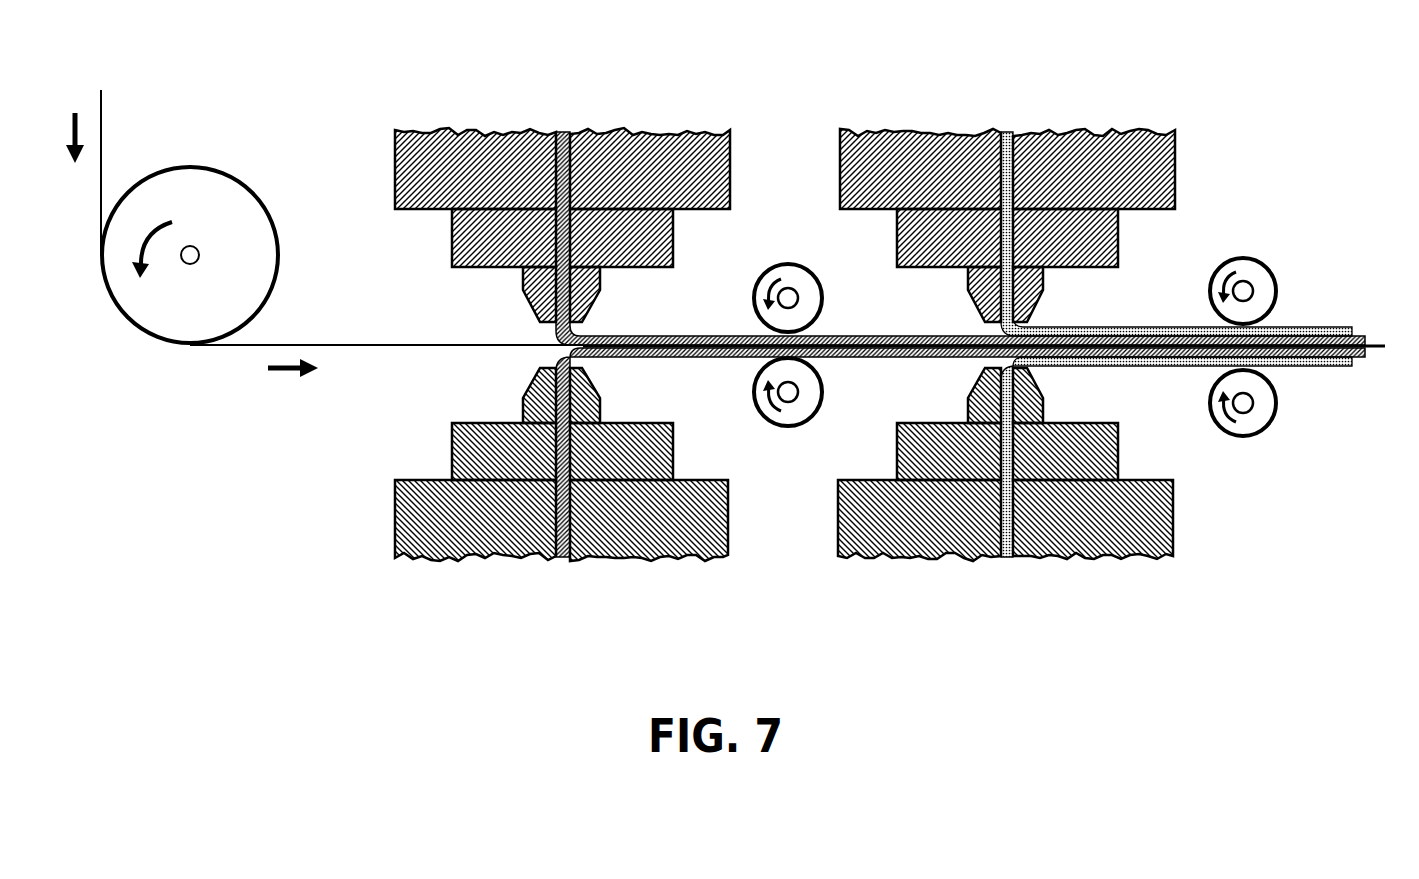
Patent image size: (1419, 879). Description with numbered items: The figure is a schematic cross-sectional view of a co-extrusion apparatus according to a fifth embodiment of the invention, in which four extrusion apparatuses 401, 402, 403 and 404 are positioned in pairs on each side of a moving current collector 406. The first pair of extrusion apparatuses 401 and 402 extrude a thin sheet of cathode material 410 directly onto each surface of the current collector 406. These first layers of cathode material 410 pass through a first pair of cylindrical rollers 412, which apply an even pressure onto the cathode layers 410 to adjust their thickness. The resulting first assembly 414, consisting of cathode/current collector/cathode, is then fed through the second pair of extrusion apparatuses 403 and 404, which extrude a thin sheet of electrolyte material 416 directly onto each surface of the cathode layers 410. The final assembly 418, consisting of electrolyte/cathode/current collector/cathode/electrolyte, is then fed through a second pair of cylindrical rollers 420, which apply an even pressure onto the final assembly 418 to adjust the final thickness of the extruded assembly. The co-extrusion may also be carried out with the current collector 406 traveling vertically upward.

The extrusion apparatus 401 is at (561, 584).
The extrusion apparatus 402 is at (565, 72).
The extrusion apparatus 403 is at (996, 584).
The extrusion apparatus 404 is at (1000, 72).
The current collector 406 is at (395, 348).
The cathode material 410 is at (730, 336).
The first pair of cylindrical rollers 412 is at (790, 263).
The first assembly 414 is at (930, 357).
The electrolyte material 416 is at (1186, 327).
The final assembly 418 is at (1318, 347).
The second pair of cylindrical rollers 420 is at (1243, 257).